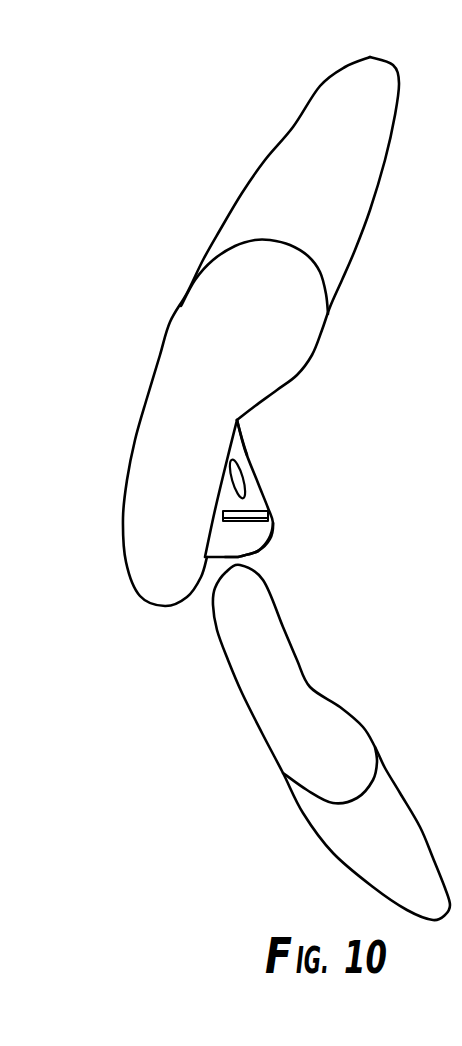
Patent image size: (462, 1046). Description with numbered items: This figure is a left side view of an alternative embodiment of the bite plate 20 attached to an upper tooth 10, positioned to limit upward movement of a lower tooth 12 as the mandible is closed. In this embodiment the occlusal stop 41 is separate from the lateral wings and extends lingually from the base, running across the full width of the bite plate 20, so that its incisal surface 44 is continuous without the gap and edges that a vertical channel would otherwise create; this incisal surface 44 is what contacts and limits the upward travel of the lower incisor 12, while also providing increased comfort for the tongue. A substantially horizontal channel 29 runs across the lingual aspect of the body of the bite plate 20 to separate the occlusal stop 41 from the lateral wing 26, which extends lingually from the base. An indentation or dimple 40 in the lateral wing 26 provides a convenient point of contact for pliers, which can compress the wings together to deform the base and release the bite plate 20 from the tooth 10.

The upper tooth 10 is at (187, 352).
The lower tooth 12 is at (260, 688).
The bite plate 20 is at (233, 520).
The lateral wing 26 is at (238, 445).
The indentation 40 is at (238, 477).
The horizontal channel 29 is at (267, 517).
The occlusal stop 41 is at (260, 538).
The incisal surface 44 is at (270, 542).